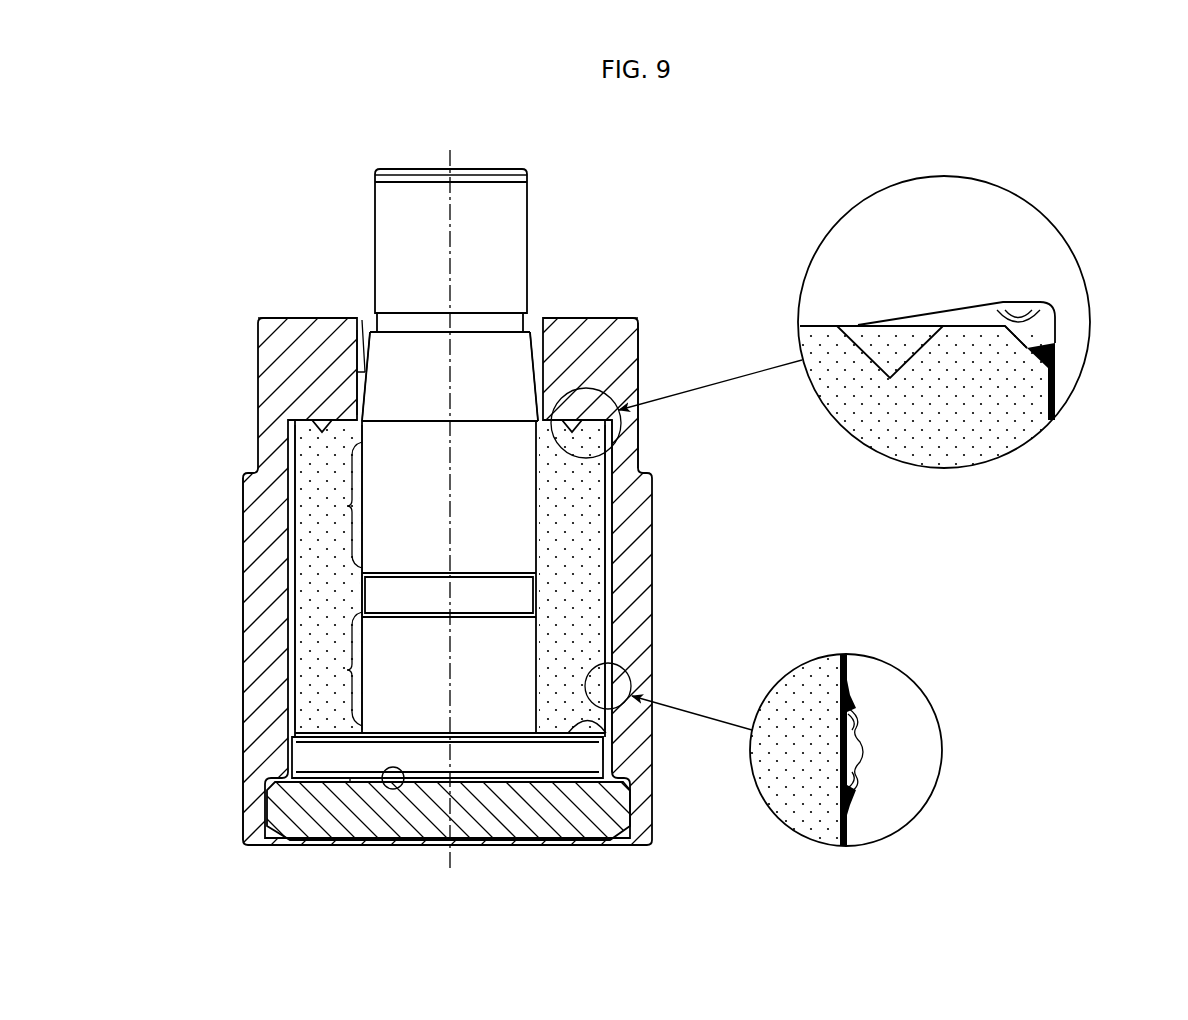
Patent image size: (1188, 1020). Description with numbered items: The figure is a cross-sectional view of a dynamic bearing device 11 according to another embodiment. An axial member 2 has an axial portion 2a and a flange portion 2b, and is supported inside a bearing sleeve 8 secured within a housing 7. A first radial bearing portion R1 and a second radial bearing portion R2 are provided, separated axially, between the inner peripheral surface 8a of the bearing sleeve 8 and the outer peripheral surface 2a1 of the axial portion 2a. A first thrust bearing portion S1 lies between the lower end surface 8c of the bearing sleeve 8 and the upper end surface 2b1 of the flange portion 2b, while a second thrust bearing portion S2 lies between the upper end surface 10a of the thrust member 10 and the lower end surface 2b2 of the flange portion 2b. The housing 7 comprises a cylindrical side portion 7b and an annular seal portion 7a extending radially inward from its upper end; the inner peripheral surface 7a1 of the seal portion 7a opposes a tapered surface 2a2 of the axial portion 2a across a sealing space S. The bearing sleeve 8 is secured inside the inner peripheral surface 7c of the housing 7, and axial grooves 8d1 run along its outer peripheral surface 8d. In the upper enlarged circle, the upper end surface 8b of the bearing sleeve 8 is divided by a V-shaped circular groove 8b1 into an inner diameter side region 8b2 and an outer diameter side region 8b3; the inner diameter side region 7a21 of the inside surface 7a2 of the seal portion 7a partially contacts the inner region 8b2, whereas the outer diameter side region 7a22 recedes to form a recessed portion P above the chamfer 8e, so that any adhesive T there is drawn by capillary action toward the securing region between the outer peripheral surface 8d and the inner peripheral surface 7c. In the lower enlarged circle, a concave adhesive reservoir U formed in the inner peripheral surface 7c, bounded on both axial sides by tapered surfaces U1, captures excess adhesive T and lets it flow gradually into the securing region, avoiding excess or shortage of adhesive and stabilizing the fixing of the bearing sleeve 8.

The axial member 2 is at (529, 226).
The axial portion 2a is at (472, 197).
The outer peripheral surface of the axial portion 2a1 is at (537, 482).
The tapered surface 2a2 is at (533, 334).
The flange portion 2b is at (615, 780).
The upper end surface of the flange portion 2b1 is at (588, 760).
The lower end surface of the flange portion 2b2 is at (588, 843).
The housing 7 is at (256, 352).
The seal portion 7a is at (308, 328).
The inner peripheral surface of the seal portion 7a1 is at (377, 383).
The inside surface of the seal portion 7a2 is at (610, 420).
The inner diameter side region of the inside surface 7a21 is at (800, 330).
The outer diameter side region of the inside surface 7a22 is at (1020, 303).
The side portion 7b is at (262, 610).
The inner peripheral surface of the housing 7c is at (615, 600).
The bearing sleeve 8 is at (582, 519).
The inner peripheral surface of the bearing sleeve 8a is at (540, 519).
The upper end surface of the bearing sleeve 8b is at (320, 418).
The circular groove 8b1 is at (857, 326).
The inner diameter side region of the upper end surface 8b2 is at (818, 326).
The outer diameter side region of the upper end surface 8b3 is at (962, 326).
The lower end surface of the bearing sleeve 8c is at (313, 745).
The outer peripheral surface of the bearing sleeve 8d is at (612, 637).
The axial grooves 8d1 is at (288, 497).
The chamfer 8e is at (1022, 337).
The thrust member 10 is at (532, 825).
The upper end surface of the thrust member 10a is at (404, 790).
The dynamic bearing device 11 is at (639, 292).
The recessed portion P is at (1045, 316).
The first radial bearing portion R1 is at (336, 507).
The second radial bearing portion R2 is at (336, 670).
The sealing space S is at (365, 337).
The first thrust bearing portion S1 is at (336, 732).
The second thrust bearing portion S2 is at (344, 785).
The excess adhesive T is at (1057, 357).
The adhesive reservoir U is at (856, 748).
The tapered surfaces U1 is at (852, 720).